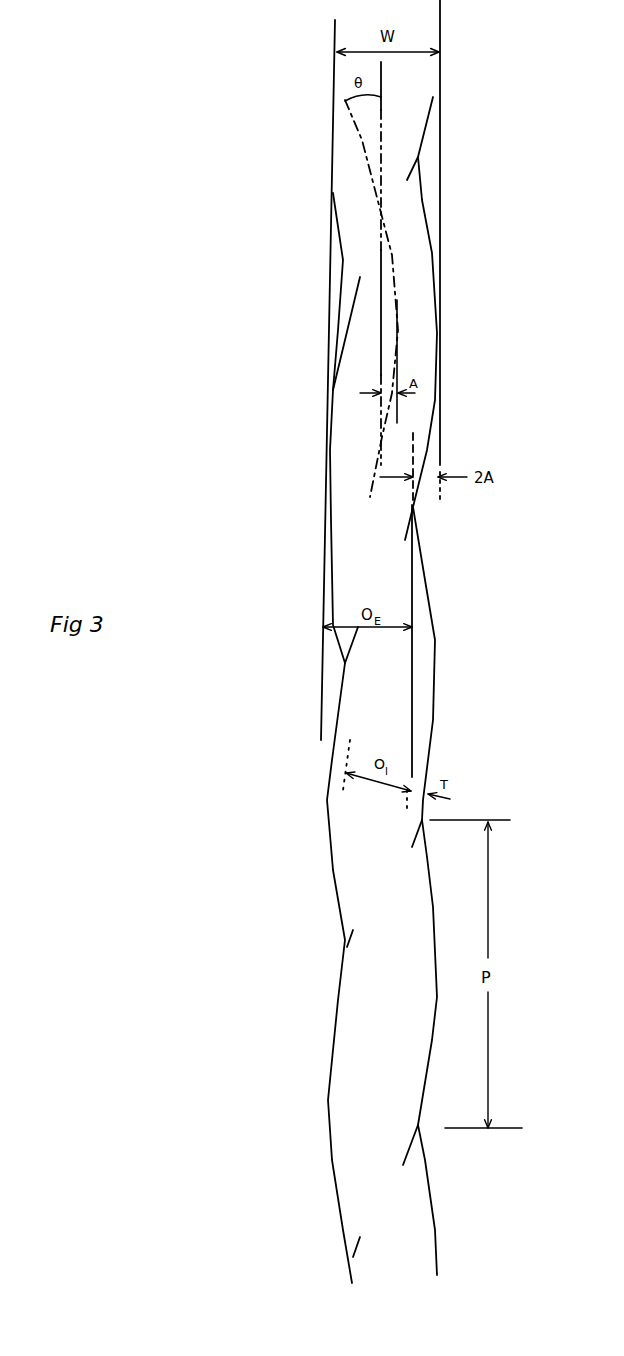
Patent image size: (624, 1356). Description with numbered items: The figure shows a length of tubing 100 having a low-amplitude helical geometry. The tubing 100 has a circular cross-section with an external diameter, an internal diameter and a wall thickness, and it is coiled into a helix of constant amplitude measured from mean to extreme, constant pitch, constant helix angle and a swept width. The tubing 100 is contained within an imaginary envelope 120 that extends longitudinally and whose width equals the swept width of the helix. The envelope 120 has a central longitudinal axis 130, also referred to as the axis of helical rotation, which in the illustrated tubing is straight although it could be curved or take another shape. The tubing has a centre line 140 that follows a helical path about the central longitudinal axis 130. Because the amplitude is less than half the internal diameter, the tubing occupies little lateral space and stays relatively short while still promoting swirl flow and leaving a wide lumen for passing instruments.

The tubing 100 is at (315, 935).
The imaginary envelope 120 is at (442, 177).
The central longitudinal axis 130 is at (381, 312).
The centre line 140 is at (375, 435).